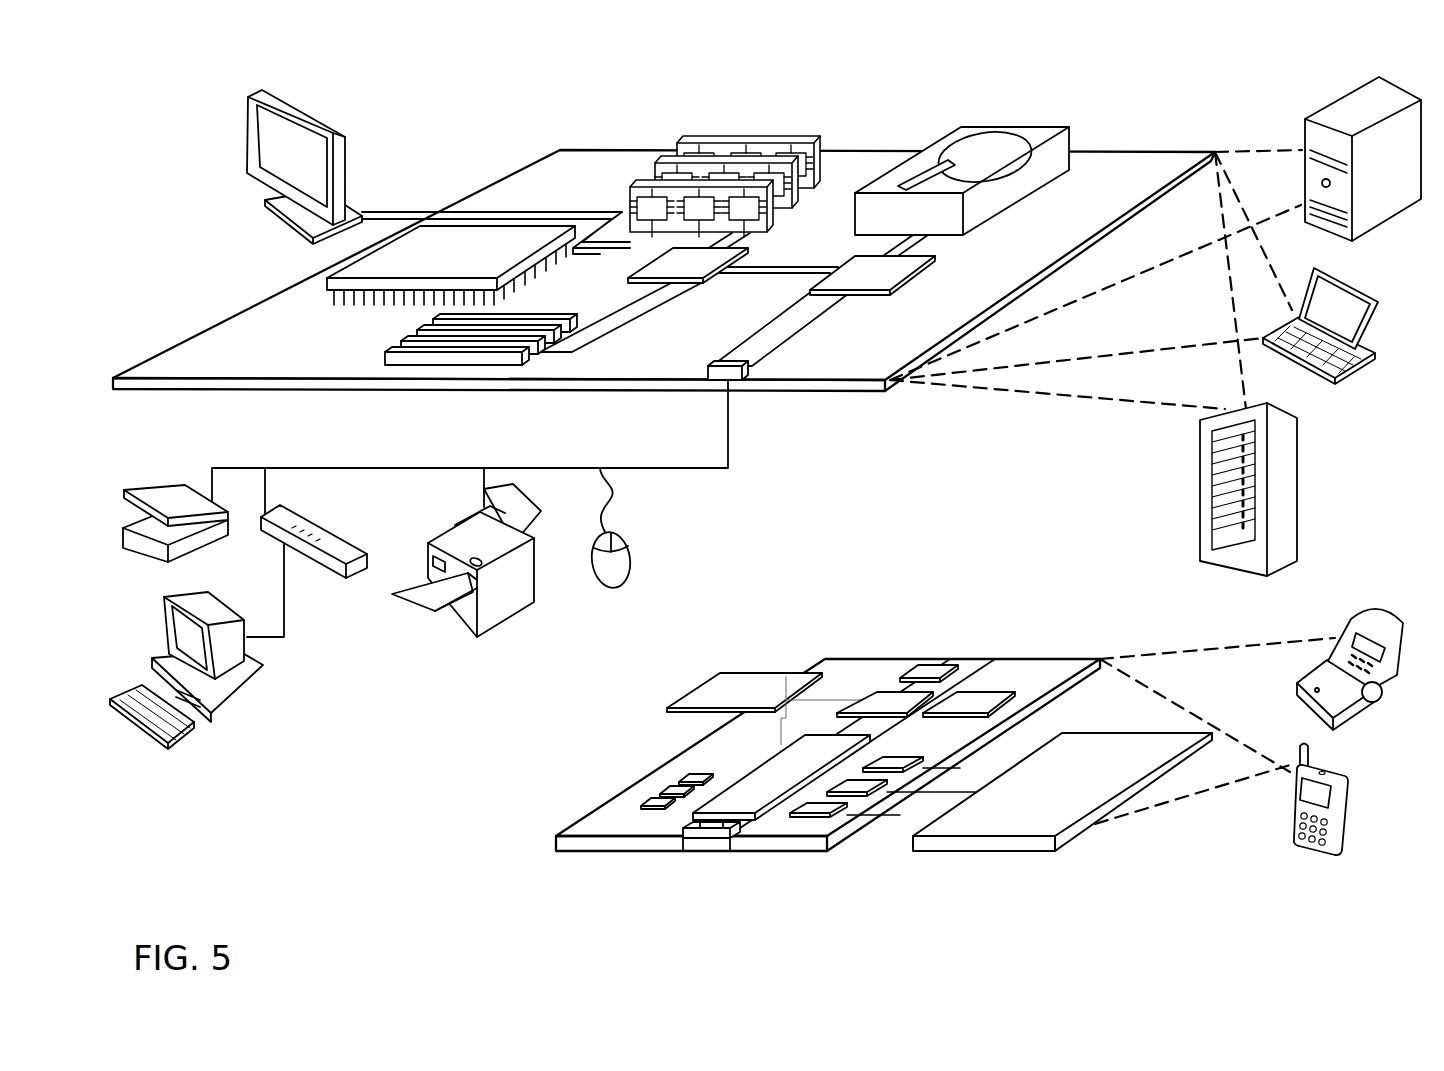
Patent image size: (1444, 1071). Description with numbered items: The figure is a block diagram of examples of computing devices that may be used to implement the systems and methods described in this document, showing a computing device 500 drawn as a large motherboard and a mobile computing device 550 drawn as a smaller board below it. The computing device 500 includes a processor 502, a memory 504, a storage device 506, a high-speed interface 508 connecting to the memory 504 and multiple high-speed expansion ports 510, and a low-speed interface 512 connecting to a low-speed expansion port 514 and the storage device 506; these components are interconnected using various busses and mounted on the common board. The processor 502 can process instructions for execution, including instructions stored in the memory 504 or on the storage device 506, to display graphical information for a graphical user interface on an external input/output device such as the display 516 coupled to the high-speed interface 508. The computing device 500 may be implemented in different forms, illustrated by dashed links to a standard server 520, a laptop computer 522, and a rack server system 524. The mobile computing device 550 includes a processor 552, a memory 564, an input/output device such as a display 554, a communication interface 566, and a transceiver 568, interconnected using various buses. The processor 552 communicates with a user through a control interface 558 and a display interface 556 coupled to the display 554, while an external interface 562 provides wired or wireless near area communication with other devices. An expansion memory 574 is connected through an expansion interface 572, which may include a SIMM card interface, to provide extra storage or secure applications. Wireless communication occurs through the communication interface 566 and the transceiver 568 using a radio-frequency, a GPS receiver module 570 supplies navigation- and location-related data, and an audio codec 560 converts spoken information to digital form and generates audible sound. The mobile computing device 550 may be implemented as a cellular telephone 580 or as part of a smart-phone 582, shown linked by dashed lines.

The computing device 500 is at (466, 112).
The processor 502 is at (327, 282).
The memory 504 is at (690, 142).
The storage device 506 is at (950, 130).
The high-speed interface 508 is at (660, 264).
The high-speed expansion ports 510 is at (402, 343).
The low-speed interface 512 is at (853, 266).
The low-speed expansion port 514 is at (746, 374).
The display 516 is at (249, 96).
The standard server 520 is at (1304, 134).
The laptop computer 522 is at (1331, 382).
The rack server system 524 is at (1200, 515).
The mobile computing device 550 is at (527, 856).
The processor 552 is at (752, 803).
The display 554 is at (1014, 822).
The display interface 556 is at (826, 807).
The control interface 558 is at (866, 790).
The audio codec 560 is at (894, 763).
The external interface 562 is at (711, 840).
The memory 564 is at (660, 792).
The communication interface 566 is at (884, 700).
The transceiver 568 is at (972, 700).
The GPS receiver module 570 is at (942, 676).
The expansion interface 572 is at (810, 673).
The expansion memory 574 is at (726, 670).
The cellular telephone 580 is at (1362, 613).
The smart-phone 582 is at (1297, 811).